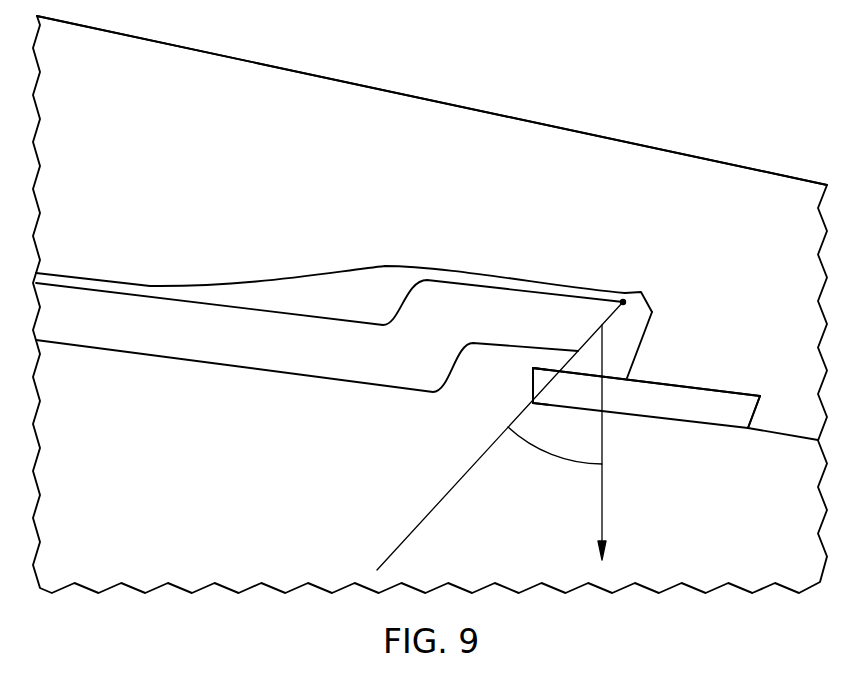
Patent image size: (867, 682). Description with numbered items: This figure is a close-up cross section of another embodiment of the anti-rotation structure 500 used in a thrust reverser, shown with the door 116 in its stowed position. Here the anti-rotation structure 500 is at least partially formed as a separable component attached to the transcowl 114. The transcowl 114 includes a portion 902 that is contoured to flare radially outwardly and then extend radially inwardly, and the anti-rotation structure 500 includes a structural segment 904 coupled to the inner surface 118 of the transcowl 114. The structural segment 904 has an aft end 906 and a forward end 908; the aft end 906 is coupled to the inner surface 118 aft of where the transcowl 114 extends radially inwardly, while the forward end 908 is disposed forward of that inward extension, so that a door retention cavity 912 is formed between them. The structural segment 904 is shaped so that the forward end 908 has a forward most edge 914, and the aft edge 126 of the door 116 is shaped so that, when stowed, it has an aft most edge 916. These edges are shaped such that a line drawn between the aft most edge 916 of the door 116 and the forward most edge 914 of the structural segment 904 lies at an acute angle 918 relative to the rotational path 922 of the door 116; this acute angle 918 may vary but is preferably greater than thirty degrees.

The transcowl 114 is at (418, 118).
The door 116 is at (308, 357).
The inner surface 118 is at (717, 394).
The aft edge 126 is at (587, 337).
The anti-rotation structure 500 is at (675, 143).
The portion 902 is at (683, 240).
The structural segment 904 is at (700, 418).
The aft end 906 is at (762, 432).
The forward end 908 is at (533, 368).
The door retention cavity 912 is at (632, 340).
The forward most edge 914 is at (532, 403).
The aft most edge 916 is at (625, 293).
The acute angle 918 is at (577, 465).
The rotational path 922 is at (603, 434).